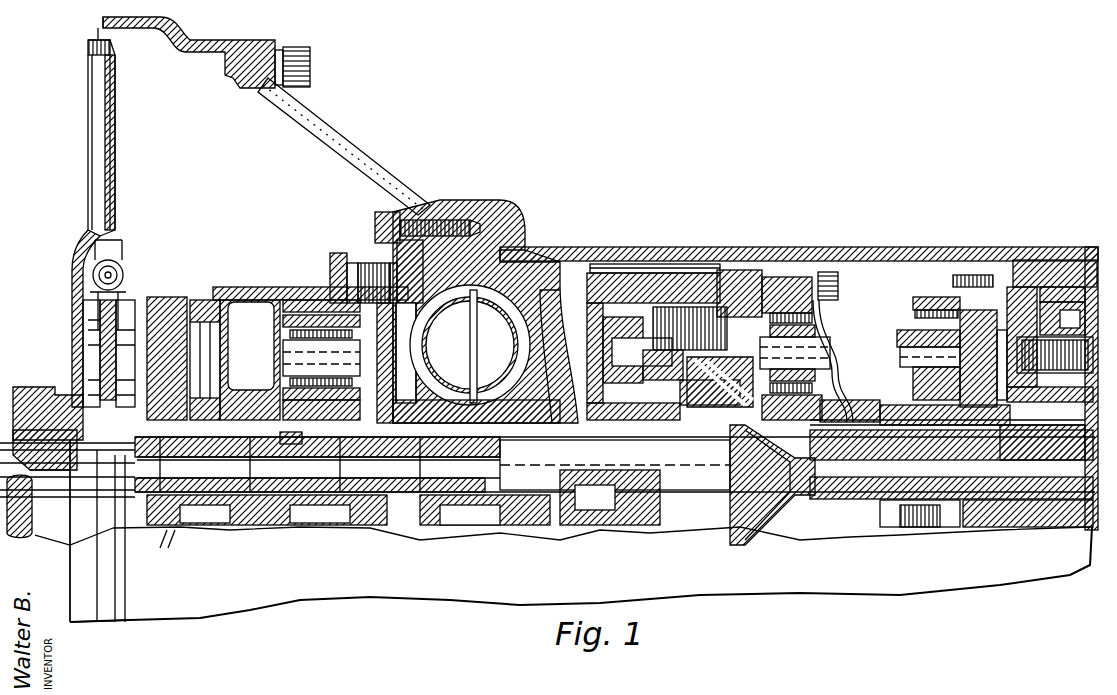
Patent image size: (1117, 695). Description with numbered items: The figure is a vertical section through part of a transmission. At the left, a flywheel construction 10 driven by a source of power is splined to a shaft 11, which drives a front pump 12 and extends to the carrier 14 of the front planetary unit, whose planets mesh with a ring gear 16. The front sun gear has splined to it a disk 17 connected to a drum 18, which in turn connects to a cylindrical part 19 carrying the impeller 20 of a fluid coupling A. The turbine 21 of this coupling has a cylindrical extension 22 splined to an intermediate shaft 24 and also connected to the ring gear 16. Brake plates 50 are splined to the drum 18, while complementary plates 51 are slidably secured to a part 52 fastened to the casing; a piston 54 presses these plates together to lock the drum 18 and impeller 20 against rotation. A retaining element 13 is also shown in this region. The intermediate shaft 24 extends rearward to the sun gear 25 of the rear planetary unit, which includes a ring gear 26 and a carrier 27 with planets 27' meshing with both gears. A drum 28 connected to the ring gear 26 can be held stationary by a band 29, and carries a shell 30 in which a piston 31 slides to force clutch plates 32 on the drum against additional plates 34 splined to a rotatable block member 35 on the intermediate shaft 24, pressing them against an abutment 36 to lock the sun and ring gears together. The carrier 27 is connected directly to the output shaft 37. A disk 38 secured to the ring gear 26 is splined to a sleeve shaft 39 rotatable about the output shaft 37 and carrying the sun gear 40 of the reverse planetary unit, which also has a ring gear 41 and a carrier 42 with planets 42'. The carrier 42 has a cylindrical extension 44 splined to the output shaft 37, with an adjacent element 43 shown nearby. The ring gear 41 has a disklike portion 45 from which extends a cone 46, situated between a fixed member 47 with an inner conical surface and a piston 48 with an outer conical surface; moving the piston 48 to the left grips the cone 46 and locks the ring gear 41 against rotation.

The flywheel construction 10 is at (52, 387).
The shaft 11 is at (171, 551).
The front pump 12 is at (160, 366).
The retaining ring 13 is at (293, 442).
The carrier 14 is at (283, 330).
The ring gear 16 is at (321, 377).
The disk 17 is at (275, 372).
The drum 18 is at (333, 298).
The cylindrical part 19 is at (440, 400).
The impeller 20 is at (470, 345).
The turbine 21 is at (518, 378).
The cylindrical extension 22 is at (504, 462).
The intermediate shaft 24 is at (620, 527).
The sun gear 25 is at (770, 530).
The ring gear 26 is at (838, 298).
The carrier 27 is at (822, 365).
The planets 27' is at (822, 316).
The drum 28 is at (740, 270).
The band 29 is at (605, 268).
The shell 30 is at (593, 305).
The piston 31 is at (600, 352).
The clutch plates 32 is at (637, 338).
The plates 34 is at (653, 288).
The rotatable block member 35 is at (720, 409).
The abutment 36 is at (787, 295).
The output shaft 37 is at (996, 527).
The disk 38 is at (838, 342).
The sleeve shaft 39 is at (951, 463).
The sun gear 40 is at (910, 527).
The ring gear 41 is at (962, 332).
The carrier 42 is at (983, 317).
The planets 42' is at (920, 348).
The end cap 43 is at (1064, 312).
The cylindrical extension 44 is at (1030, 442).
The disklike portion 45 is at (1022, 337).
The cone 46 is at (1045, 287).
The fixed member 47 is at (1015, 290).
The piston 48 is at (1050, 369).
The brake plates 50 is at (383, 232).
The complementary plates 51 is at (365, 265).
The part 52 is at (335, 262).
The piston 54 is at (468, 345).
The fluid coupling A is at (517, 292).